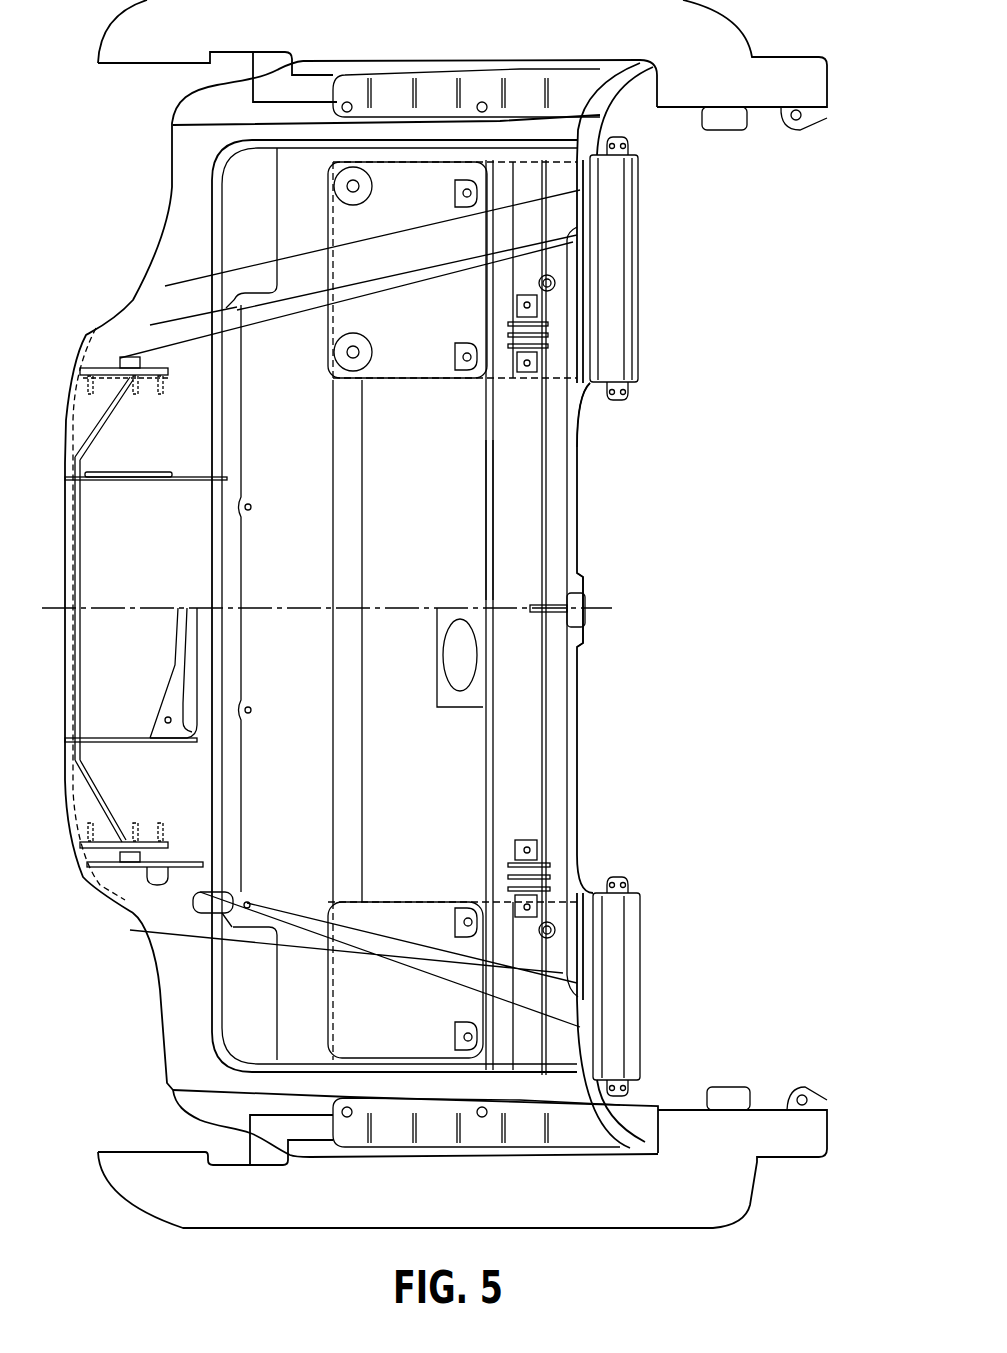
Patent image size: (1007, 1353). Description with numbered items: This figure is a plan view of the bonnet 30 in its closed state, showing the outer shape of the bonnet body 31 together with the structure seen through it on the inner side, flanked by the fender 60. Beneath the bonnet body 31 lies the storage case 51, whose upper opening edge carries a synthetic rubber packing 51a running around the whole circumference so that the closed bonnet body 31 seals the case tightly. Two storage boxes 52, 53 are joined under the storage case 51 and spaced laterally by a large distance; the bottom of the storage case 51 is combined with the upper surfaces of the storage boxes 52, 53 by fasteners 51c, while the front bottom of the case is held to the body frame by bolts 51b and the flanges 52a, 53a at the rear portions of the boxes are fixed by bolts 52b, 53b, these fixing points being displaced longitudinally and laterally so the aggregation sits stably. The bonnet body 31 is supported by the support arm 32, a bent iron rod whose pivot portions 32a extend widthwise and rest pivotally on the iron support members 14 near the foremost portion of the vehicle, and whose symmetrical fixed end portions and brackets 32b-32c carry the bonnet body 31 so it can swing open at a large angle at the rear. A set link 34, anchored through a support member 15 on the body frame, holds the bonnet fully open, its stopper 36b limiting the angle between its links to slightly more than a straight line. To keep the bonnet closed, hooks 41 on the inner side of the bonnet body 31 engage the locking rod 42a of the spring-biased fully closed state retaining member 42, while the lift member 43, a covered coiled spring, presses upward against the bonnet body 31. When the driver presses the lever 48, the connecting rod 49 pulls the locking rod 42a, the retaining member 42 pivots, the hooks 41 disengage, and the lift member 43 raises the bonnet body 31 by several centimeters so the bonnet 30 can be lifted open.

The bonnet 30 is at (118, 127).
The bonnet body 31 is at (172, 233).
The support arm 32 is at (78, 650).
The pivot portions 32a is at (80, 483).
The fixed end portions and brackets 32b-32c is at (190, 375).
The support member 14 is at (117, 742).
The support member 15 is at (200, 892).
The set link 34 is at (115, 882).
The stopper 36b is at (158, 880).
The hook 41 is at (548, 322).
The fully closed state retaining member 42 is at (548, 345).
The locking rod 42a is at (547, 700).
The lift member 43 is at (538, 283).
The lever 48 is at (586, 577).
The connecting rod 49 is at (570, 622).
The storage case 51 is at (462, 465).
The packing 51a is at (490, 525).
The bolts 51b is at (252, 508).
The fasteners 51c is at (367, 360).
The storage box 52 is at (615, 975).
The flange 52a is at (612, 878).
The bolts 52b is at (630, 882).
The storage box 53 is at (610, 218).
The flange 53a is at (612, 402).
The bolts 53b is at (632, 393).
The fender 60 is at (688, 83).